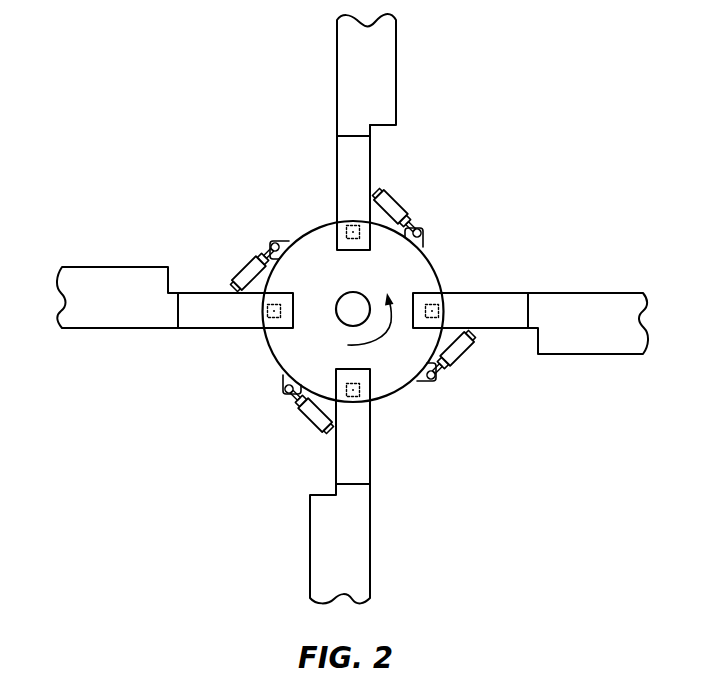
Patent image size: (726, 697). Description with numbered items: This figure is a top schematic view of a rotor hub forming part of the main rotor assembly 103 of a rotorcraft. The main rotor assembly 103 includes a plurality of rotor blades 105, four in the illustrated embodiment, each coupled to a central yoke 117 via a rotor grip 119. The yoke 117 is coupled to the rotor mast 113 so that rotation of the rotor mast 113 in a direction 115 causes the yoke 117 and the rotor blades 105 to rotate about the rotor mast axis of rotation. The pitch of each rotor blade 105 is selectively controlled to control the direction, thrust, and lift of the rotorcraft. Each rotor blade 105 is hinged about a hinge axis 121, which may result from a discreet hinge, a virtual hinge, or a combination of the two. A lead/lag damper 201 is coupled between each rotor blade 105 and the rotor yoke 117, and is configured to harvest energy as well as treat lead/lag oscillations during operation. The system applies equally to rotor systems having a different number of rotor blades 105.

The main rotor assembly 103 is at (147, 170).
The rotor blade 105 is at (337, 94).
The rotor mast 113 is at (340, 297).
The direction 115 is at (392, 333).
The central yoke 117 is at (432, 267).
The rotor grip 119 is at (337, 183).
The hinge axis 121 is at (347, 231).
The lead/lag damper 201 is at (414, 195).